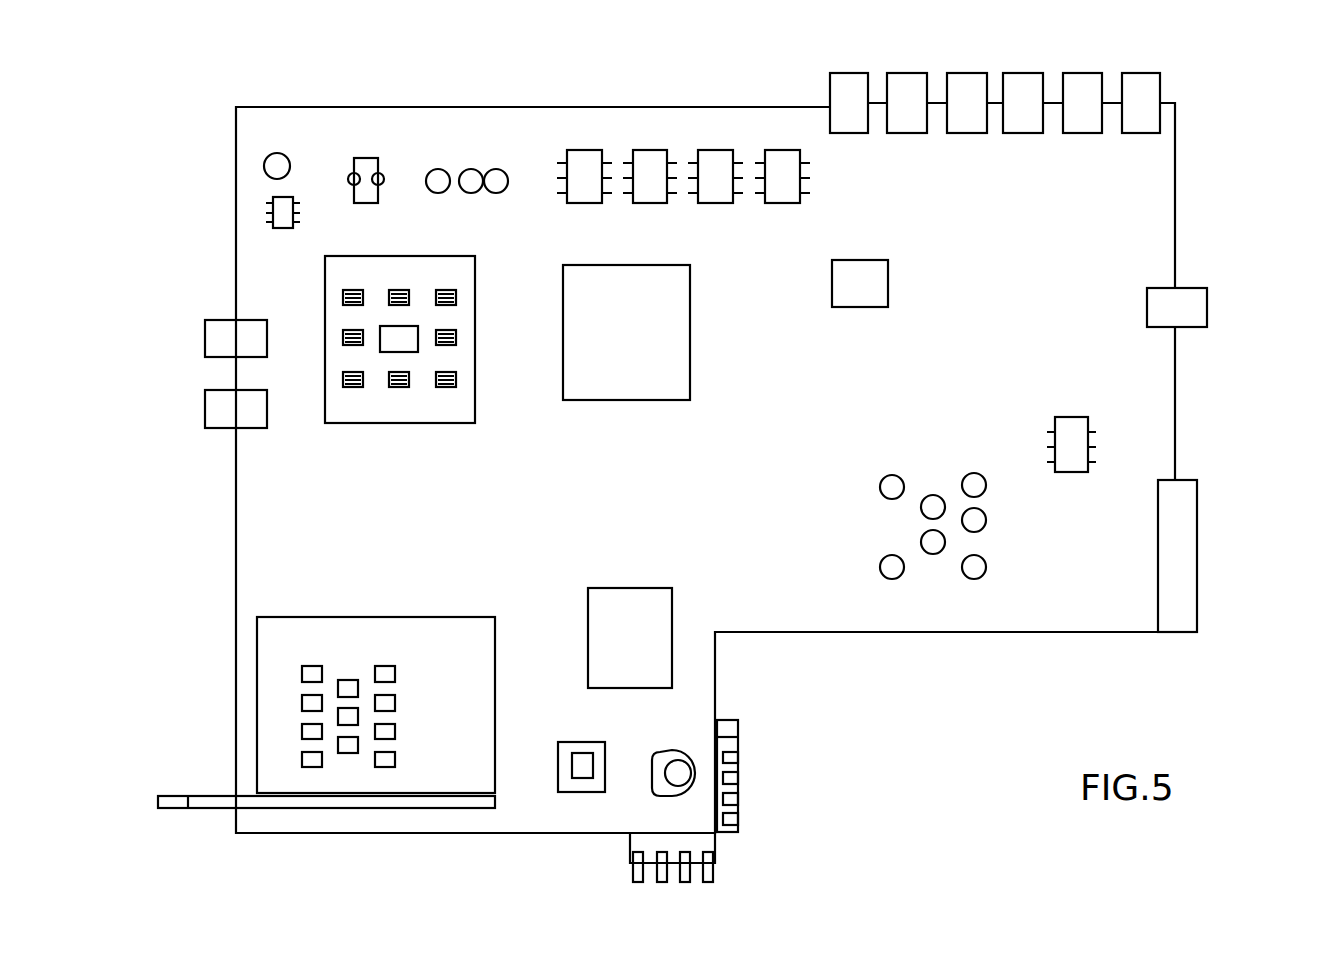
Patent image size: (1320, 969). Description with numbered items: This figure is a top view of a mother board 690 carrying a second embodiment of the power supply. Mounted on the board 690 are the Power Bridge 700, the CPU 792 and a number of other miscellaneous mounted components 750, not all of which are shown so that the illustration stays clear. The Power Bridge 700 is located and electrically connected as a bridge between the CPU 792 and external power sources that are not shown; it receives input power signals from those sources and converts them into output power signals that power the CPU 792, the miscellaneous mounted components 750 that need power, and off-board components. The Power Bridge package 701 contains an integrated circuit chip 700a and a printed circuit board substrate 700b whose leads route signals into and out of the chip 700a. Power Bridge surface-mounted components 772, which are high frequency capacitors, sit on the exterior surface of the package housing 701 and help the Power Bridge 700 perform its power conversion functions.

The board 690 is at (1050, 633).
The miscellaneous mounted components 750 is at (353, 140).
The Power Bridge 700 is at (445, 302).
The integrated circuit chip 700a is at (413, 352).
The printed circuit board substrate 700b is at (352, 275).
The Power Bridge package 701 is at (477, 408).
The Power Bridge surface-mounted components 772 is at (457, 378).
The CPU 792 is at (644, 265).